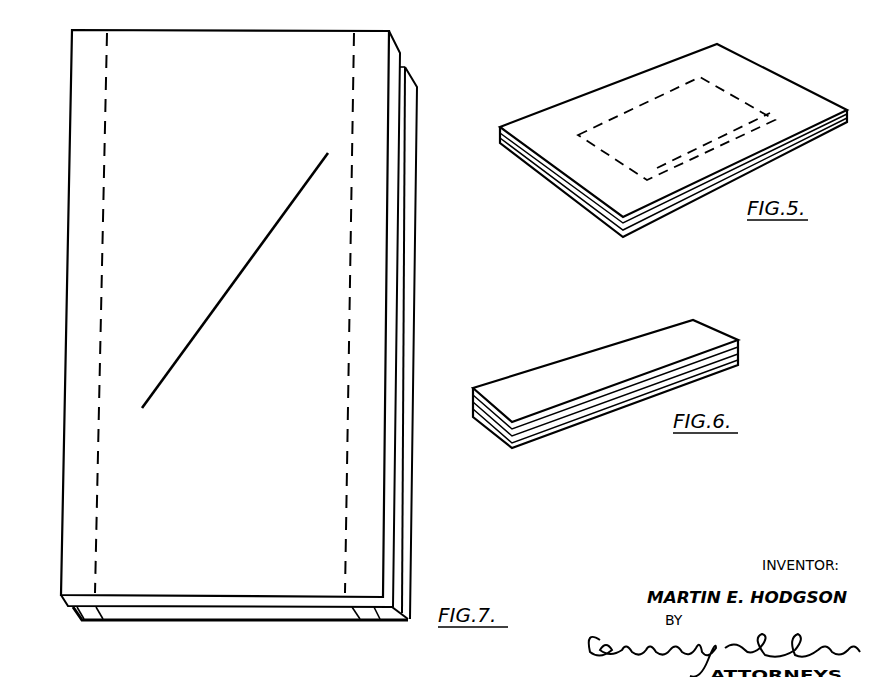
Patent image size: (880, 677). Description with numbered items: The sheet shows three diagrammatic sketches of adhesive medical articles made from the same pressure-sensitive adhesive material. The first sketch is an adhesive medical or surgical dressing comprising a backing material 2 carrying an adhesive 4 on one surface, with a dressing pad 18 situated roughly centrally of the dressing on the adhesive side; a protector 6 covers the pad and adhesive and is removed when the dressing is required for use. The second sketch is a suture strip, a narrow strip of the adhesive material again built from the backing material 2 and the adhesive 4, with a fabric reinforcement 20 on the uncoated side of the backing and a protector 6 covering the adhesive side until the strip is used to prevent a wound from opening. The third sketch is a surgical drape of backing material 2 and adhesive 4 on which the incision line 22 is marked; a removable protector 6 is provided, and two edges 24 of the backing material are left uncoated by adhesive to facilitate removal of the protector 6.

In FIG. 7, the backing material 2 is at (408, 188).
In FIG. 5, the backing material 2 is at (677, 210).
In FIG. 6, the backing material 2 is at (473, 403).
In FIG. 7, the adhesive 4 is at (216, 609).
In FIG. 5, the adhesive 4 is at (648, 213).
In FIG. 6, the adhesive 4 is at (480, 417).
In FIG. 7, the protector 6 is at (392, 90).
In FIG. 5, the protector 6 is at (502, 125).
In FIG. 6, the protector 6 is at (500, 440).
In FIG. 5, the dressing pad 18 is at (657, 112).
In FIG. 6, the fabric reinforcement 20 is at (473, 390).
In FIG. 7, the incision line 22 is at (255, 252).
In FIG. 7, the uncoated edges 24 is at (88, 608).